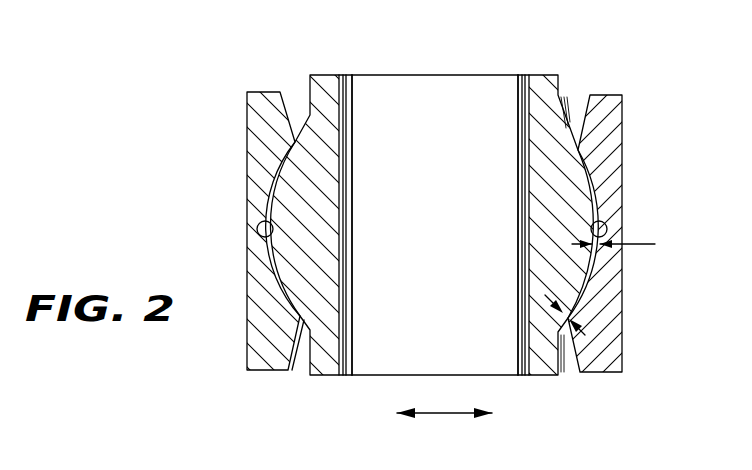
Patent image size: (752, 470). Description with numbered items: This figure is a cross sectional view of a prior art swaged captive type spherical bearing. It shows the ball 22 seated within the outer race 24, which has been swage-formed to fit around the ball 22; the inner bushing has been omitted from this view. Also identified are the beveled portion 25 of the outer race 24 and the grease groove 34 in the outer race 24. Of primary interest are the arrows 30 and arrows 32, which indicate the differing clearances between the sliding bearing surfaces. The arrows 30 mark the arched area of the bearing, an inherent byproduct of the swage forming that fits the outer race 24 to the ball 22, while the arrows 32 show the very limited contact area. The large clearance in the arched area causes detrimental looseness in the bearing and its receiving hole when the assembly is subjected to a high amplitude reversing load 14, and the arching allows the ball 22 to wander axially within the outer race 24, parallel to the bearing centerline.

The high amplitude reversing load 14 is at (450, 413).
The ball 22 is at (560, 77).
The outer race 24 is at (623, 157).
The beveled portion 25 is at (583, 112).
The arrows 30 is at (643, 247).
The arrows 32 is at (623, 373).
The grease groove 34 is at (258, 227).